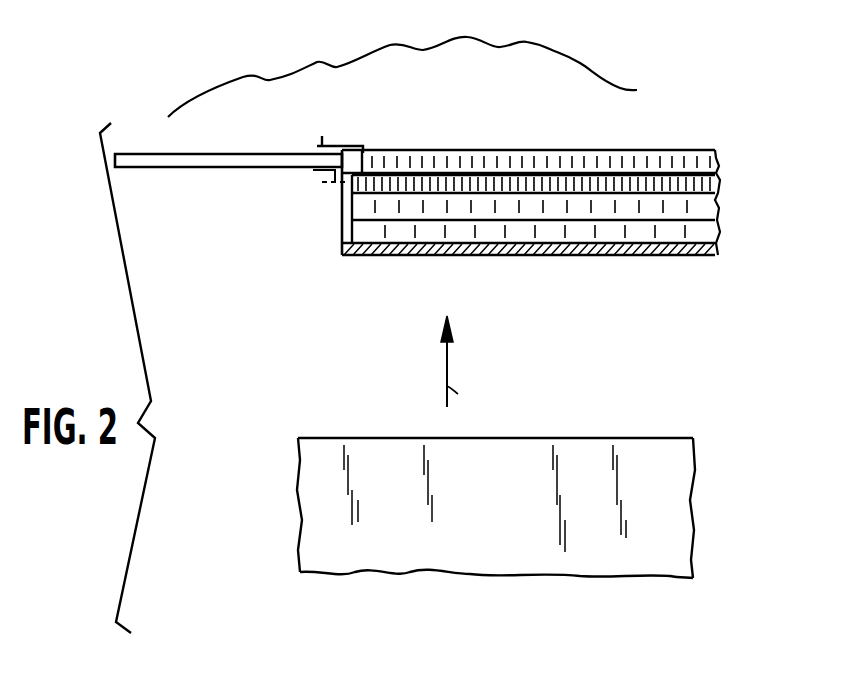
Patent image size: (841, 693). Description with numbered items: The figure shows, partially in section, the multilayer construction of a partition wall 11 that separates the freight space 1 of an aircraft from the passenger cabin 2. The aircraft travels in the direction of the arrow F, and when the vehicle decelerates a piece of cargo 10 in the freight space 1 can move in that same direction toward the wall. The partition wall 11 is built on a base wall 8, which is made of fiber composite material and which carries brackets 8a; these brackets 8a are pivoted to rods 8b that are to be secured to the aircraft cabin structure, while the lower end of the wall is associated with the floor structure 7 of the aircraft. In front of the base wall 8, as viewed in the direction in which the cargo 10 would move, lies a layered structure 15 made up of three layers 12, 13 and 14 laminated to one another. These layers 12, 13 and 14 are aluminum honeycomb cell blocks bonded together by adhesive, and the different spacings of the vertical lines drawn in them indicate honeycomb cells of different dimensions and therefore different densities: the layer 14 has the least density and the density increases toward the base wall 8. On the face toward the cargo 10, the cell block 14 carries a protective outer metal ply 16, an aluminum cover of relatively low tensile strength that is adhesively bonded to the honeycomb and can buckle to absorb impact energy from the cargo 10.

The freight space 1 is at (579, 366).
The passenger cabin 2 is at (486, 130).
The floor structure 7 is at (473, 60).
The base wall 8 is at (678, 157).
The brackets 8a is at (334, 153).
The rods 8b is at (196, 158).
The cargo 10 is at (500, 502).
The partition wall 11 is at (628, 130).
The layer 12 is at (362, 188).
The layer 13 is at (362, 207).
The layer 14 is at (413, 228).
The layered structure 15 is at (735, 172).
The outer metal ply 16 is at (614, 258).
The arrow F is at (459, 366).